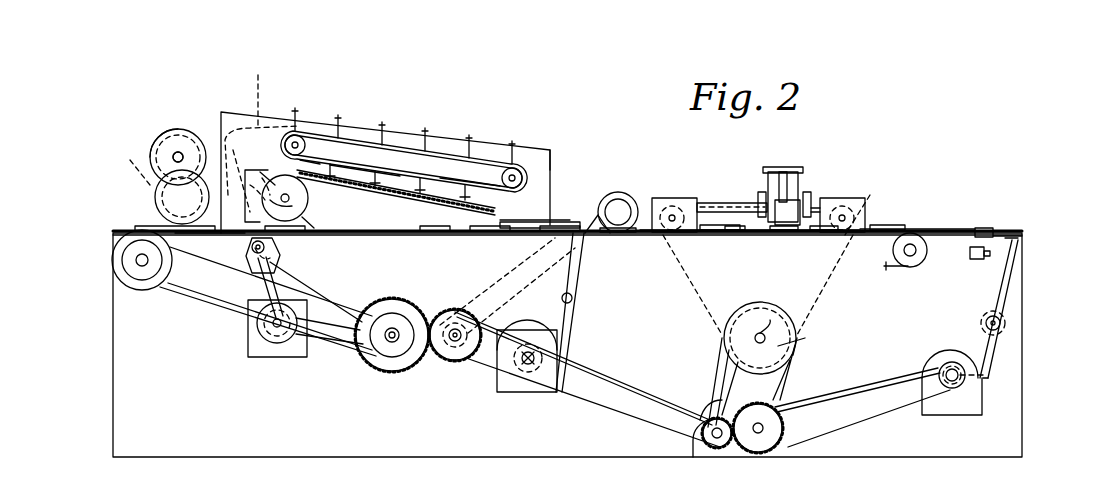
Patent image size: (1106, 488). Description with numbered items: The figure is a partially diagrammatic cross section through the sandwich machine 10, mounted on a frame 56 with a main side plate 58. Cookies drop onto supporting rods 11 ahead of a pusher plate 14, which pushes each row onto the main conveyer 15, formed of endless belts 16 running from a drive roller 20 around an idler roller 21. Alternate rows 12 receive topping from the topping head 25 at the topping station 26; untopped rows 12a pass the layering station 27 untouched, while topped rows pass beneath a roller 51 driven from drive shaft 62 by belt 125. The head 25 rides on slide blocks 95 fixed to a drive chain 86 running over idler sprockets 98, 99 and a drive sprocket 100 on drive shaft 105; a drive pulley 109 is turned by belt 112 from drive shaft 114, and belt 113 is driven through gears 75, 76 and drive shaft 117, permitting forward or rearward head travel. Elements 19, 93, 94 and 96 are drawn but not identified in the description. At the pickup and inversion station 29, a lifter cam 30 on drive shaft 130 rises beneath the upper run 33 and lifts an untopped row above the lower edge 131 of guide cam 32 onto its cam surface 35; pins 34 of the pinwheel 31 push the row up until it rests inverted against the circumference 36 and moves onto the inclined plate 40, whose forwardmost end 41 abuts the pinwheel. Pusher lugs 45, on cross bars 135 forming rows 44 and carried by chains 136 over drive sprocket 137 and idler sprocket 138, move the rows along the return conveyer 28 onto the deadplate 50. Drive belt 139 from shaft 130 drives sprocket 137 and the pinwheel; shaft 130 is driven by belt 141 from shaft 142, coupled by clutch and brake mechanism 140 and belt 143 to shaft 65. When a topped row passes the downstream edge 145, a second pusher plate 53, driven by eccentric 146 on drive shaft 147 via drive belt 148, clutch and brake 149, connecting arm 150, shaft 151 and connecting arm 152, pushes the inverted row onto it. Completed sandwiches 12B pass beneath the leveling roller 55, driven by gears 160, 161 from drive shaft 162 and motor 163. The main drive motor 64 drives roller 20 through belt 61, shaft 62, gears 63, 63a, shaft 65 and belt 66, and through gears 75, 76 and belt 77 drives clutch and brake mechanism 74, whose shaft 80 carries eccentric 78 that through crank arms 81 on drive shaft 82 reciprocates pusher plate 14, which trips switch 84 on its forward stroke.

The sandwich machine 10 is at (964, 119).
The supporting rods 11 is at (936, 228).
The row of cookies 12 is at (740, 234).
The untopped row of cookies 12a is at (680, 235).
The completed sandwiches 12B is at (140, 225).
The pusher plate 14 is at (995, 226).
The main conveyer 15 is at (885, 226).
The belts 16 is at (830, 236).
The belt run 19 is at (990, 352).
The drive roller 20 is at (115, 255).
The idler roller 21 is at (922, 262).
The topping head 25 is at (784, 232).
The topping station 26 is at (826, 148).
The layering station 27 is at (569, 127).
The return conveyer 28 is at (420, 110).
The pickup and inversion station 29 is at (320, 251).
The lifter cam 30 is at (280, 268).
The pinwheel 31 is at (310, 204).
The guide cam 32 is at (259, 186).
The upper run 33 is at (478, 238).
The pins 34 is at (318, 226).
The cam surface 35 is at (248, 186).
The circumference 36 is at (281, 207).
The inclined plate 40 is at (398, 206).
The forwardmost end 41 is at (328, 158).
The rows 44 is at (472, 150).
The pusher lugs 45 is at (470, 177).
The deadplate 50 is at (505, 234).
The roller 51 is at (620, 200).
The second pusher plate 53 is at (522, 222).
The leveling roller 55 is at (160, 197).
The frame 56 is at (107, 417).
The main side plate 58 is at (469, 437).
The belt 61 is at (600, 412).
The drive shaft 62 is at (448, 358).
The gear 63 is at (464, 362).
The gear 63a is at (398, 375).
The main drive motor 64 is at (703, 460).
The drive shaft 65 is at (400, 330).
The belt 66 is at (228, 300).
The clutch and brake mechanism 74 is at (964, 410).
The gear 75 is at (703, 437).
The gear 76 is at (783, 424).
The belt 77 is at (858, 384).
The eccentric 78 is at (950, 350).
The shaft 80 is at (958, 380).
The crank arms 81 is at (1013, 293).
The drive shaft 82 is at (1001, 323).
The switch 84 is at (977, 259).
The drive chain 86 is at (833, 295).
The motor 93 is at (778, 175).
The motor shaft 94 is at (790, 172).
The slide blocks 95 is at (822, 196).
The rod 96 is at (730, 203).
The idler sprocket 98 is at (672, 198).
The idler sprocket 99 is at (867, 197).
The drive sprocket 100 is at (790, 302).
The drive shaft 105 is at (757, 329).
The drive pulley 109 is at (798, 340).
The drive belt 112 is at (712, 376).
The drive belt 113 is at (790, 372).
The drive shaft 114 is at (714, 398).
The drive shaft 117 is at (762, 433).
The belt 125 is at (615, 270).
The drive shaft 130 is at (252, 247).
The lower edge 131 is at (240, 226).
The cross bars 135 is at (428, 164).
The chains 136 is at (358, 123).
The drive sprocket 137 is at (306, 140).
The idler sprocket 138 is at (524, 178).
The drive belt 139 is at (262, 139).
The clutch and brake mechanism 140 is at (272, 353).
The belt 141 is at (253, 288).
The shaft 142 is at (272, 328).
The belt 143 is at (340, 352).
The downstream edge 145 is at (497, 281).
The eccentric 146 is at (532, 378).
The drive shaft 147 is at (585, 368).
The drive belt 148 is at (510, 328).
The electrical clutch and brake 149 is at (510, 392).
The connecting arm 150 is at (566, 326).
The shaft 151 is at (573, 298).
The connecting arm 152 is at (548, 252).
The gear 160 is at (126, 168).
The gear 161 is at (186, 128).
The drive shaft 162 is at (178, 152).
The motor 163 is at (160, 150).